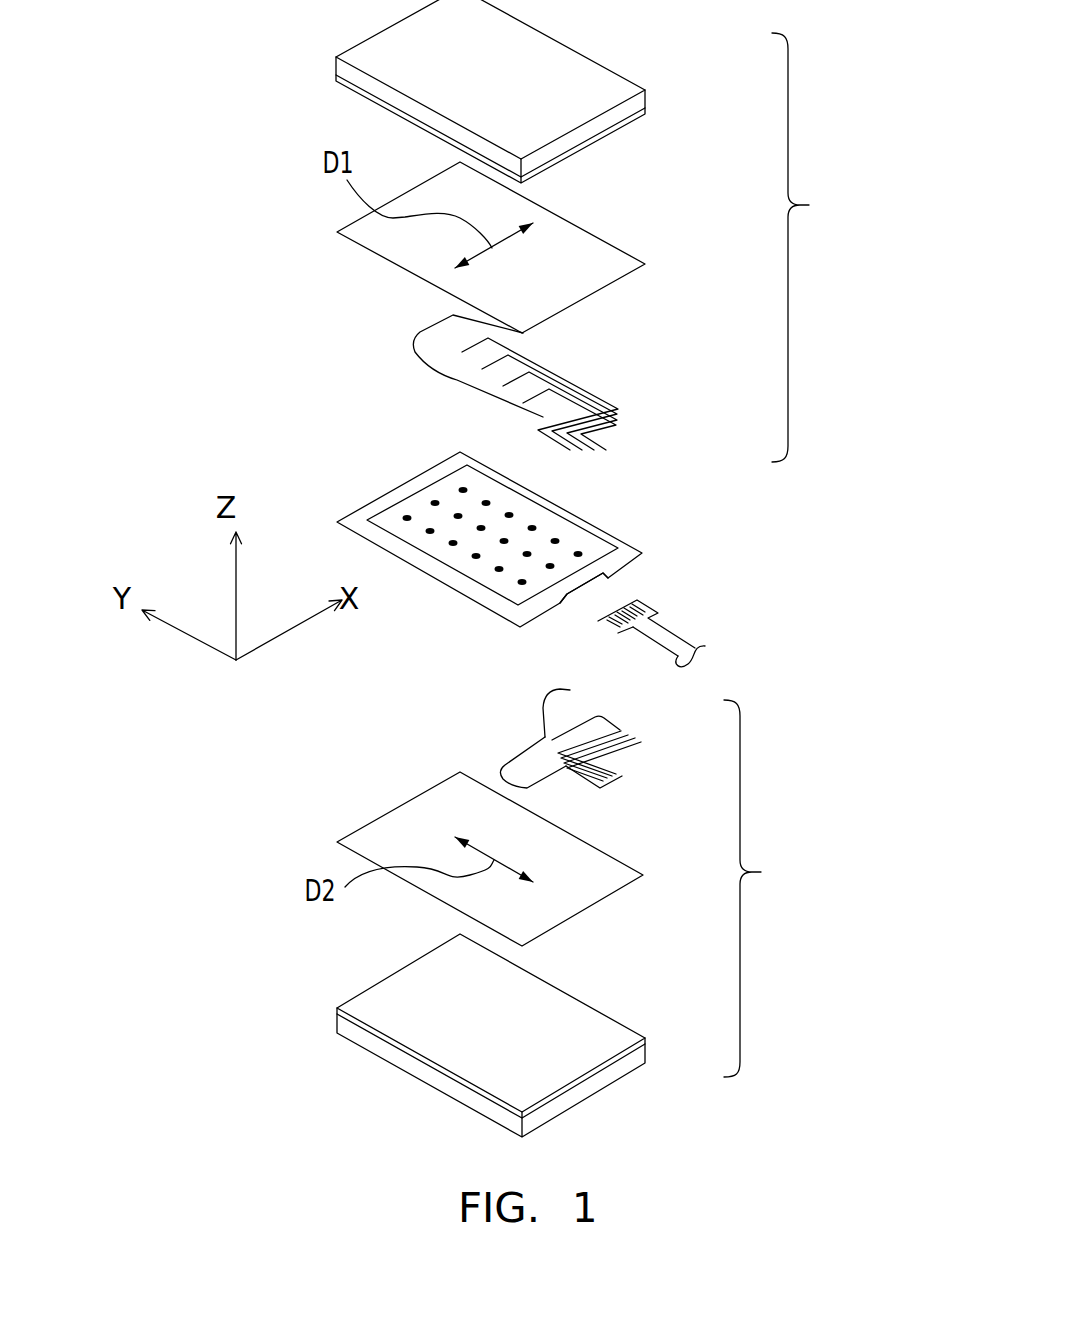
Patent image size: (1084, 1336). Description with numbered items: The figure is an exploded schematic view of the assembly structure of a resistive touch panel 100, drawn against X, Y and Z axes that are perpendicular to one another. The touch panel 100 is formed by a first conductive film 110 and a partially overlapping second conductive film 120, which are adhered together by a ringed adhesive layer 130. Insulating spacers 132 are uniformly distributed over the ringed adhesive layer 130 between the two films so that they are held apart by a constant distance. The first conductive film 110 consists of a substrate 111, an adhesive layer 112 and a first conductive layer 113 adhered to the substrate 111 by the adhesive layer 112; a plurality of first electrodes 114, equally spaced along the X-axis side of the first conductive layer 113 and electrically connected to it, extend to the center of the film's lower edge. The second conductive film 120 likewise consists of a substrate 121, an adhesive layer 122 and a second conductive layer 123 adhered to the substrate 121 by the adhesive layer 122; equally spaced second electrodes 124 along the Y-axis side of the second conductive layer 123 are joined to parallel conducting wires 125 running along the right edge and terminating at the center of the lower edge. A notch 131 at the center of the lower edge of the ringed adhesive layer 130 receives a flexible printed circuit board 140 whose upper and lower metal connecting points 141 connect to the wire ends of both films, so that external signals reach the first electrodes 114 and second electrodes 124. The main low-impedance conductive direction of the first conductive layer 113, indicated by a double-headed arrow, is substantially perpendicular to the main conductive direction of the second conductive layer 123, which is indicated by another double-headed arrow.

The resistive touch panel 100 is at (248, 114).
The first conductive film 110 is at (769, 888).
The substrate 111 is at (645, 1058).
The adhesive layer 112 is at (612, 1040).
The first conductive layer 113 is at (612, 875).
The first electrodes 114 is at (563, 689).
The second conductive film 120 is at (819, 247).
The substrate 121 is at (598, 78).
The adhesive layer 122 is at (610, 136).
The second conductive layer 123 is at (600, 250).
The second electrodes 124 is at (454, 381).
The conducting wires 125 is at (582, 380).
The ringed adhesive layer 130 is at (603, 527).
The notch 131 is at (625, 570).
The insulating spacers 132 is at (407, 518).
The flexible printed circuit board 140 is at (675, 634).
The metal connecting points 141 is at (643, 603).